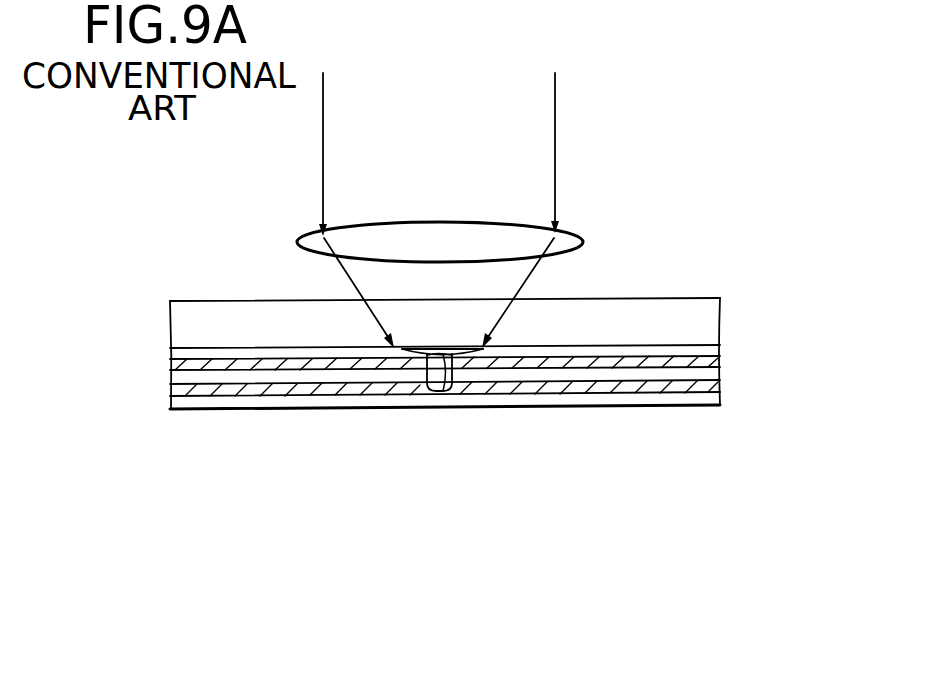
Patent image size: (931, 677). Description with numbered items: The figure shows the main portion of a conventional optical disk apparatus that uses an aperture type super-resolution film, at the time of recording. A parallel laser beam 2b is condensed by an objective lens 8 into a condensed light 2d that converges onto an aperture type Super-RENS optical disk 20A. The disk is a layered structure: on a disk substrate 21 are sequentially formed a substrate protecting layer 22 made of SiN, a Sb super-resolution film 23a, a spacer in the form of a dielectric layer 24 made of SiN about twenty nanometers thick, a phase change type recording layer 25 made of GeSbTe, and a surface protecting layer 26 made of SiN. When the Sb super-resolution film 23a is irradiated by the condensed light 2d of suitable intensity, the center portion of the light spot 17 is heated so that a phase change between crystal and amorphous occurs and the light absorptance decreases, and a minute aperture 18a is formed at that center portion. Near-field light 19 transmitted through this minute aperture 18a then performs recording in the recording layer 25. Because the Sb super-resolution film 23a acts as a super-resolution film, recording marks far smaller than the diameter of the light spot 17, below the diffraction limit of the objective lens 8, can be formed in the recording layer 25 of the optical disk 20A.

The parallel laser beam 2b is at (557, 155).
The objective lens 8 is at (296, 242).
The condensed light 2d is at (536, 265).
The aperture type Super-RENS optical disk 20A is at (451, 326).
The disk substrate 21 is at (706, 313).
The substrate protecting layer 22 is at (171, 352).
The Sb super-resolution film 23a is at (722, 363).
The dielectric layer 24 is at (173, 378).
The phase change type recording layer 25 is at (722, 387).
The surface protecting layer 26 is at (171, 402).
The near-field light 19 is at (427, 389).
The minute aperture 18a is at (444, 392).
The light spot 17 is at (448, 390).